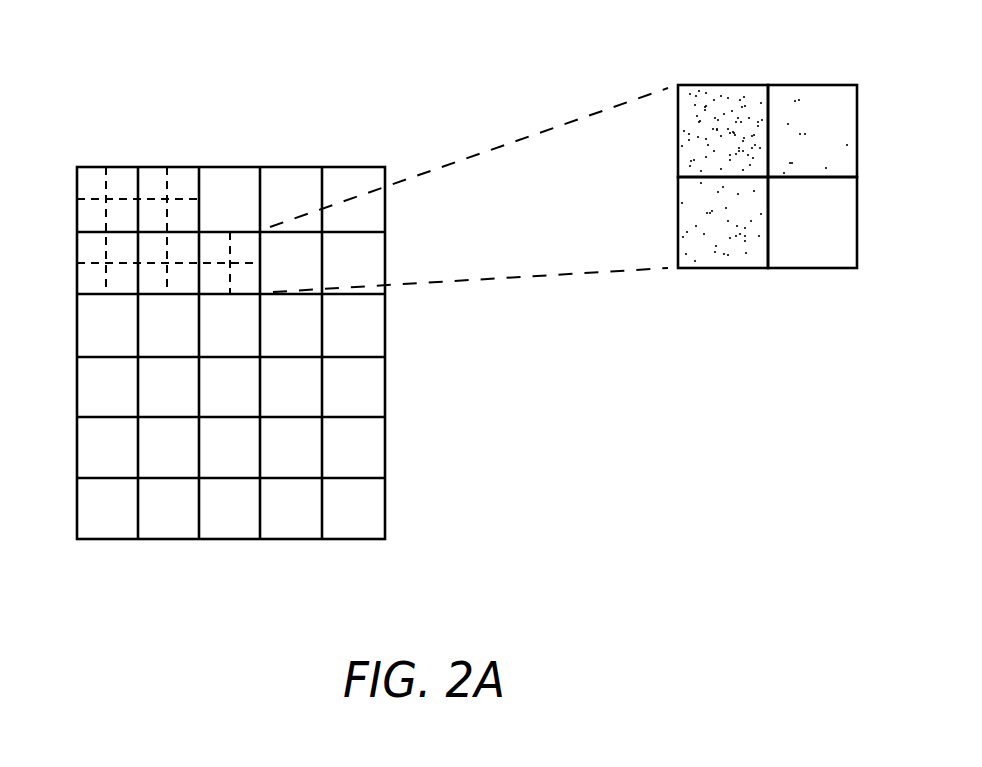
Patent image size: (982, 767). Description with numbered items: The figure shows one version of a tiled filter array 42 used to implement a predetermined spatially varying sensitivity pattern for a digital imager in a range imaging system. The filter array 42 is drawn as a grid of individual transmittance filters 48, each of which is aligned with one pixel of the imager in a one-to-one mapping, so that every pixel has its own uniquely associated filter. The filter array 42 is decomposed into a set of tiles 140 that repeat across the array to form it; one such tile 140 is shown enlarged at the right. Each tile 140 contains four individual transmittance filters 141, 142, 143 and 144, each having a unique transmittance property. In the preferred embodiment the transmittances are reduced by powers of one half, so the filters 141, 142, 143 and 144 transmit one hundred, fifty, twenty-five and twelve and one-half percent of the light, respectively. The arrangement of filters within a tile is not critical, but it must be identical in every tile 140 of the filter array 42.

The filter array 42 is at (232, 540).
The individual transmittance filters 48 is at (148, 167).
The tile 140 is at (262, 251).
The individual transmittance filter 141 is at (825, 253).
The individual transmittance filter 142 is at (812, 90).
The individual transmittance filter 143 is at (727, 260).
The individual transmittance filter 144 is at (713, 88).